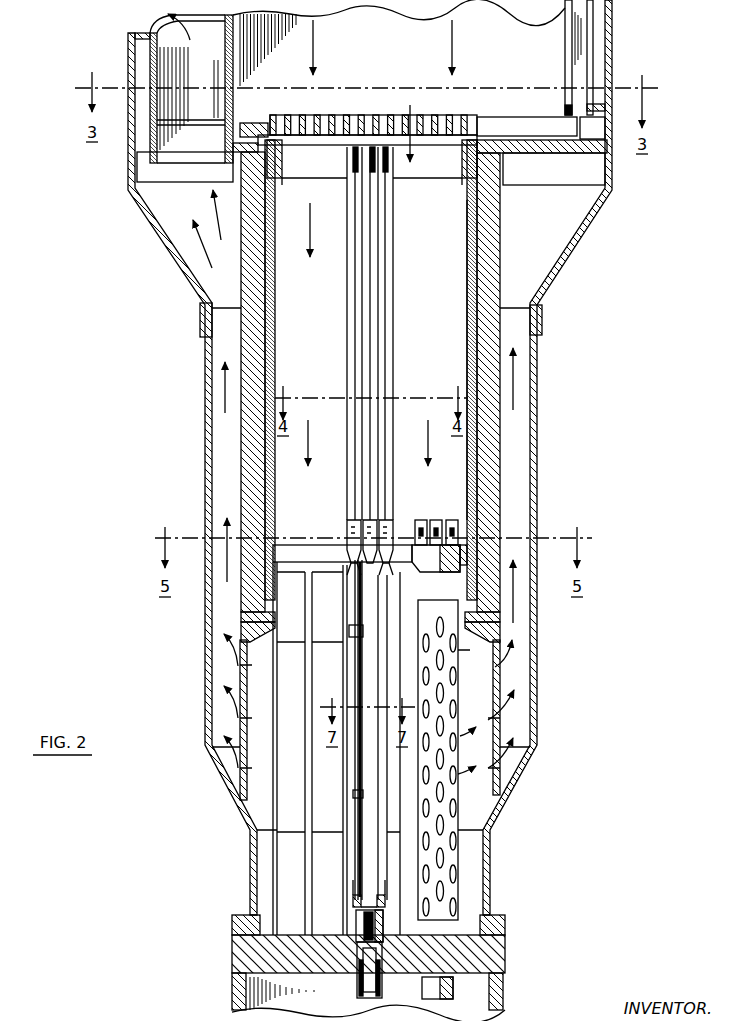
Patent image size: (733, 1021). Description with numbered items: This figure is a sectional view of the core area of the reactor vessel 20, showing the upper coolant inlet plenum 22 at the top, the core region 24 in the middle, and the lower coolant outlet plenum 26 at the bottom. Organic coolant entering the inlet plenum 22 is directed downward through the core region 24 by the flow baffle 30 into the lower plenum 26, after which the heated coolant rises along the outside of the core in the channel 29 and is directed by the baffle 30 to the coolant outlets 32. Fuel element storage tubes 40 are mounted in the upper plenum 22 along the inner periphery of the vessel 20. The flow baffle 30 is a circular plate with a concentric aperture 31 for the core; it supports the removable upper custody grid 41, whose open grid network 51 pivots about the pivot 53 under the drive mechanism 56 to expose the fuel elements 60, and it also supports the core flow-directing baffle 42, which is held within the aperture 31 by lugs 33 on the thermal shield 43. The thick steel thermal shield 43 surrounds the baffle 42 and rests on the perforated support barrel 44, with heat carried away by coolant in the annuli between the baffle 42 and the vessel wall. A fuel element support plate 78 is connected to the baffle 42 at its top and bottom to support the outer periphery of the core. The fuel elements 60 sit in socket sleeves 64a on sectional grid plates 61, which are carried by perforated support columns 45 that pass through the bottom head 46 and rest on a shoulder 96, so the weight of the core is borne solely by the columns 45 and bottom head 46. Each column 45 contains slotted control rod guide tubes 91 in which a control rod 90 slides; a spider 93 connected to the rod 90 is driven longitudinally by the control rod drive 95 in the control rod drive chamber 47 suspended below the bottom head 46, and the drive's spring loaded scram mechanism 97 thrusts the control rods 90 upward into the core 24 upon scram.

The reactor vessel 20 is at (197, 294).
The upper coolant inlet plenum 22 is at (399, 43).
The core region 24 is at (372, 254).
The lower coolant outlet plenum 26 is at (263, 791).
The channel 29 is at (223, 444).
The flow baffle 30 is at (568, 158).
The aperture 31 is at (287, 132).
The coolant outlet 32 is at (185, 98).
The lug 33 is at (461, 655).
The fuel element storage tube 40 is at (592, 50).
The upper custody grid 41 is at (510, 140).
The core flow-directing baffle 42 is at (468, 362).
The thermal shield 43 is at (490, 279).
The perforated support barrel 44 is at (495, 700).
The perforated support column 45 is at (425, 851).
The bottom head 46 is at (497, 958).
The control rod drive chamber 47 is at (370, 1019).
The open grid network 51 is at (362, 126).
The pivot 53 is at (562, 114).
The drive mechanism 56 is at (596, 137).
The fuel element 60 is at (373, 251).
The sectional grid plate 61 is at (423, 564).
The fuel element receiving socket sleeve 64a is at (393, 528).
The fuel element support plate 78 is at (283, 166).
The control rod 90 is at (353, 574).
The control rod guide tube 91 is at (360, 633).
The spider 93 is at (371, 900).
The control rod drive 95 is at (356, 968).
The shoulder 96 is at (385, 927).
The spring loaded insertion or scram mechanism 97 is at (357, 925).